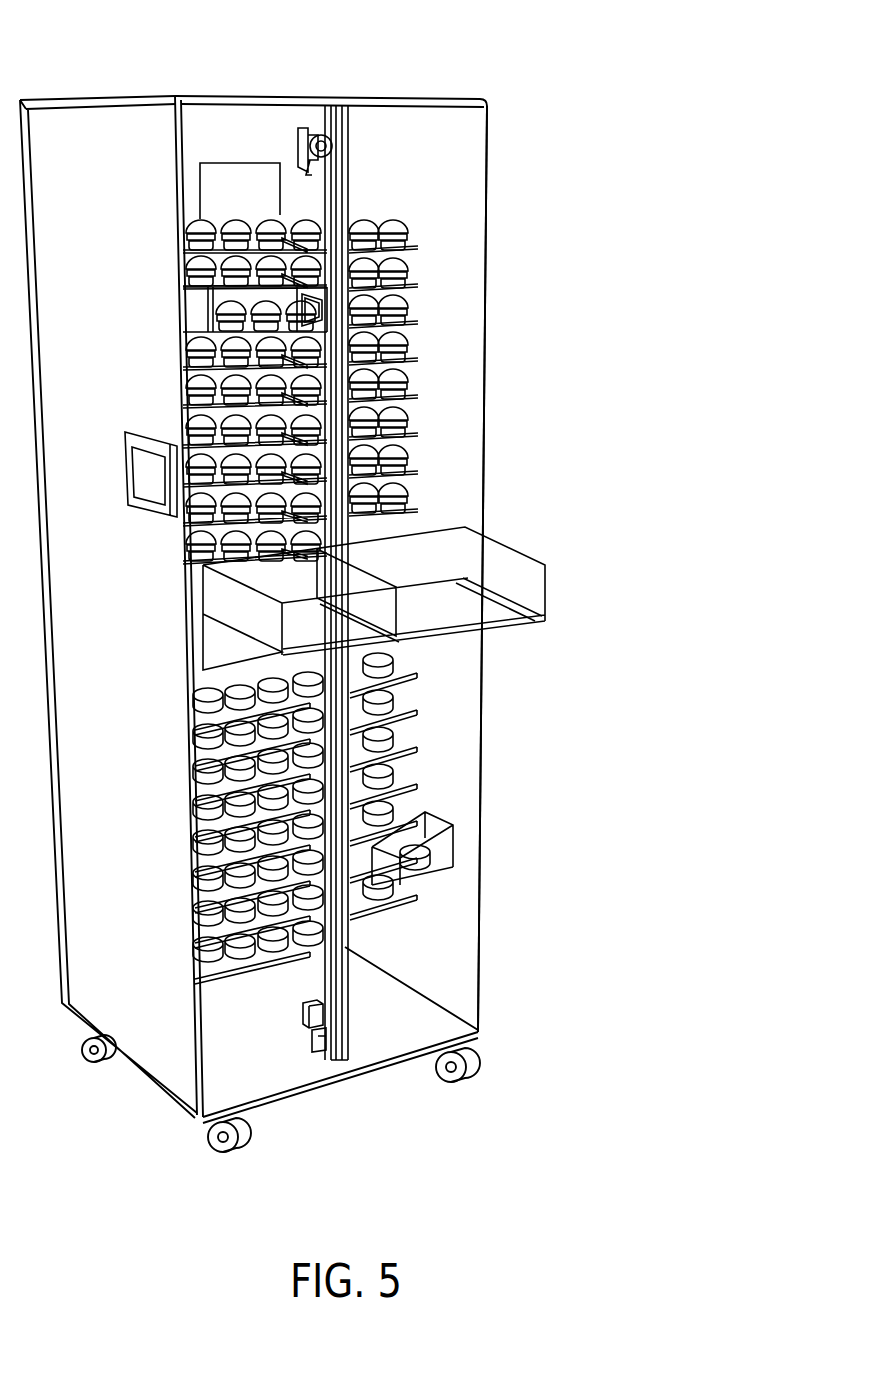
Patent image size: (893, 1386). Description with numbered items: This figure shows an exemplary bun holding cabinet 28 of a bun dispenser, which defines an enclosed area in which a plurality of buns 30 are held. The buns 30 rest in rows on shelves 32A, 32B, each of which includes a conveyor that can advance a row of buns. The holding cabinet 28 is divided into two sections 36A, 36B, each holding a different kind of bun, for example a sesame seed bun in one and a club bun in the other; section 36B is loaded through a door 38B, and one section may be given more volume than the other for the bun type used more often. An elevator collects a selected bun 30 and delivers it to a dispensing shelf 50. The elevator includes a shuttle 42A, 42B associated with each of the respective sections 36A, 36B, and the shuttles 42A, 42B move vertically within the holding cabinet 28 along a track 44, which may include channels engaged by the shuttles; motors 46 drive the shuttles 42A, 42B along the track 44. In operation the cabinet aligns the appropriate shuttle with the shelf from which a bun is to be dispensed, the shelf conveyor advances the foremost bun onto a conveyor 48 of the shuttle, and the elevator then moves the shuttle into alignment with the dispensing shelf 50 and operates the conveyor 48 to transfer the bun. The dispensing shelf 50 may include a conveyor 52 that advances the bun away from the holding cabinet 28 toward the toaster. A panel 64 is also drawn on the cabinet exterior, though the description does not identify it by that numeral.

The holding cabinet 28 is at (455, 98).
The buns 30 is at (323, 282).
The shelves 32A is at (197, 873).
The shelves 32B is at (420, 320).
The section 36A is at (207, 102).
The section 36B is at (408, 100).
The door 38B is at (248, 176).
The shuttle 42A is at (185, 300).
The shuttle 42B is at (425, 822).
The track 44 is at (337, 187).
The motors 46 is at (323, 135).
The conveyor 48 is at (228, 328).
The dispensing shelf 50 is at (513, 530).
The conveyor 52 is at (488, 608).
The display panel 64 is at (150, 436).